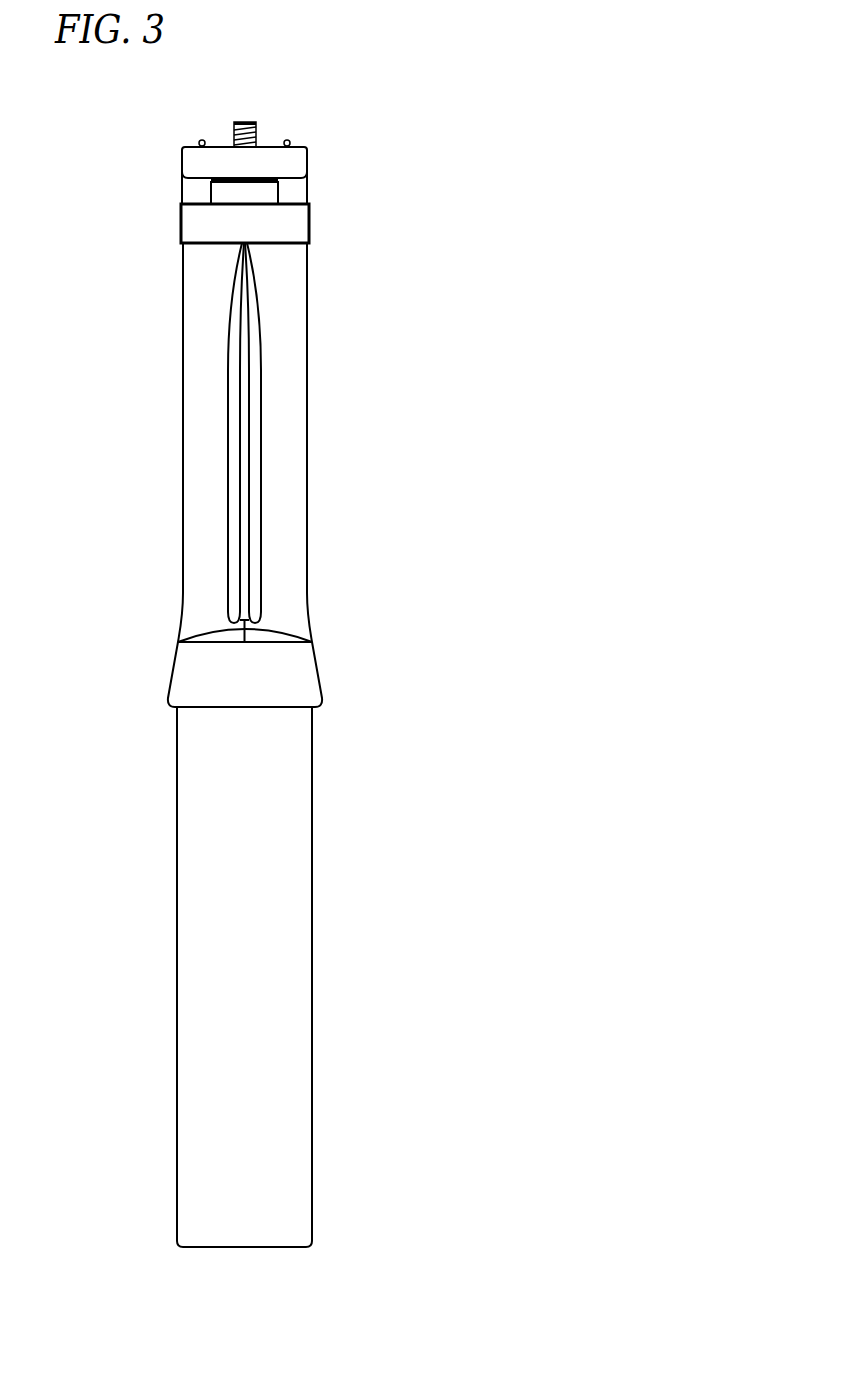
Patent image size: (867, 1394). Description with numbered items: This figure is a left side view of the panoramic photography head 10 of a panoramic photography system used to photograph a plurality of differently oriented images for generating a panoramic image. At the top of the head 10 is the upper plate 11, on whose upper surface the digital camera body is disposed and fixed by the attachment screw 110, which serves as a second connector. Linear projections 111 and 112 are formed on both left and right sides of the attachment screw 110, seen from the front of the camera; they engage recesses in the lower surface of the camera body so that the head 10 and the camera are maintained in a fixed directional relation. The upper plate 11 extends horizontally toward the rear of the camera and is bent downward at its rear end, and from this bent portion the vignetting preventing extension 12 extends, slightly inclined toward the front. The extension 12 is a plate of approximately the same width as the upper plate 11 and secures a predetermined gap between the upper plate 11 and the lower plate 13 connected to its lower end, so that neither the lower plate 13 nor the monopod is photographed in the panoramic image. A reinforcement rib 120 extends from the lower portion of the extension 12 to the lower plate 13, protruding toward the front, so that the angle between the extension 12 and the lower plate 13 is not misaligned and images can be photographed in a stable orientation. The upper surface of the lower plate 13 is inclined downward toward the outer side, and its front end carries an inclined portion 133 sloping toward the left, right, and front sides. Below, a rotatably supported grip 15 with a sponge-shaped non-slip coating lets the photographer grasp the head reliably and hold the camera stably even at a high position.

The panoramic photography head 10 is at (452, 269).
The upper plate 11 is at (307, 157).
The attachment screw 110 is at (235, 122).
The linear projection 111 is at (201, 140).
The linear projection 112 is at (288, 140).
The vignetting preventing extension 12 is at (307, 377).
The reinforcement rib 120 is at (247, 443).
The lower plate 13 is at (320, 675).
The inclined portion 133 is at (265, 637).
The grip 15 is at (313, 922).